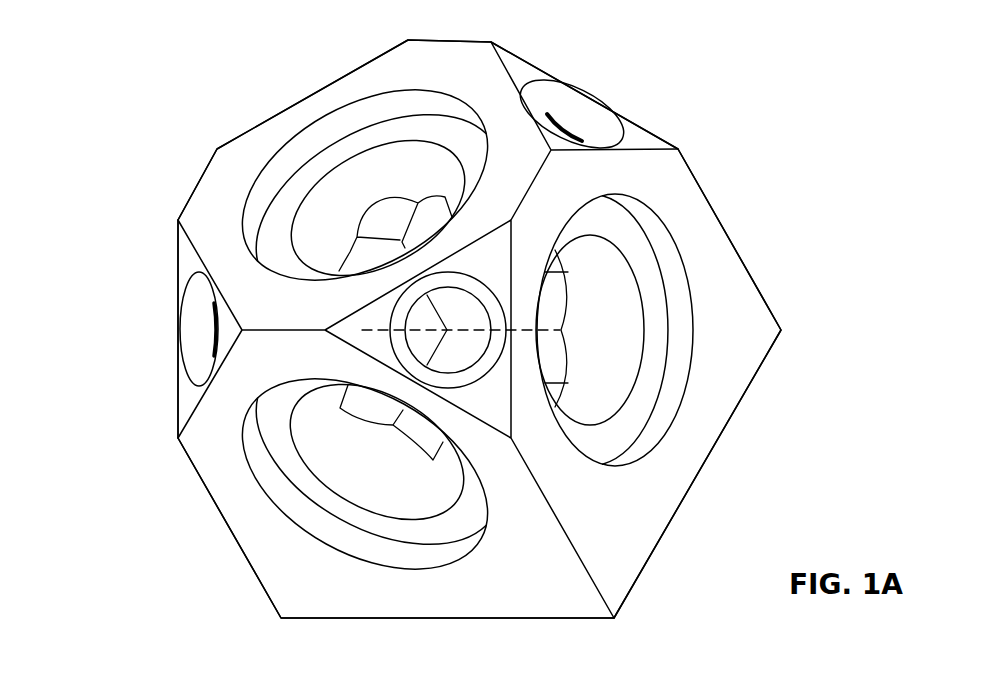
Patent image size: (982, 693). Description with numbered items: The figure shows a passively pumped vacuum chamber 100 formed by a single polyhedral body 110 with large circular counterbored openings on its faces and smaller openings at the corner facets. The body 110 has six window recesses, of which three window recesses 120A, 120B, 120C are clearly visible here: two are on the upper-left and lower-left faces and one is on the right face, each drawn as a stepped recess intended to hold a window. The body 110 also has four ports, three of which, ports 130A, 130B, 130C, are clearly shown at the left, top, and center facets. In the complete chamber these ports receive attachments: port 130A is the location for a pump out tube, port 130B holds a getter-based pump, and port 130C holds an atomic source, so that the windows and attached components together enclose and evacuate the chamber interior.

The vacuum chamber 100 is at (272, 39).
The body 110 is at (200, 112).
The window recess 120A is at (315, 509).
The window recess 120B is at (273, 199).
The window recess 120C is at (609, 300).
The port 130A is at (201, 341).
The port 130B is at (580, 118).
The port 130C is at (455, 347).